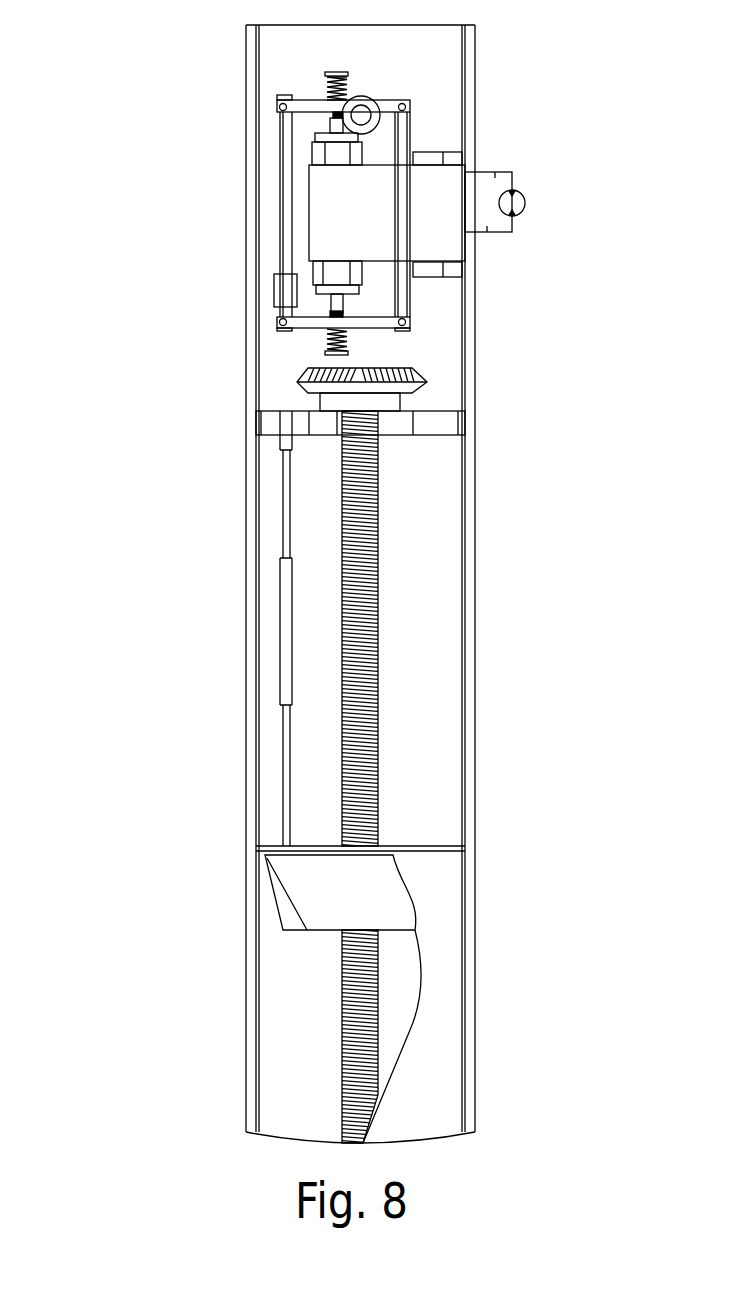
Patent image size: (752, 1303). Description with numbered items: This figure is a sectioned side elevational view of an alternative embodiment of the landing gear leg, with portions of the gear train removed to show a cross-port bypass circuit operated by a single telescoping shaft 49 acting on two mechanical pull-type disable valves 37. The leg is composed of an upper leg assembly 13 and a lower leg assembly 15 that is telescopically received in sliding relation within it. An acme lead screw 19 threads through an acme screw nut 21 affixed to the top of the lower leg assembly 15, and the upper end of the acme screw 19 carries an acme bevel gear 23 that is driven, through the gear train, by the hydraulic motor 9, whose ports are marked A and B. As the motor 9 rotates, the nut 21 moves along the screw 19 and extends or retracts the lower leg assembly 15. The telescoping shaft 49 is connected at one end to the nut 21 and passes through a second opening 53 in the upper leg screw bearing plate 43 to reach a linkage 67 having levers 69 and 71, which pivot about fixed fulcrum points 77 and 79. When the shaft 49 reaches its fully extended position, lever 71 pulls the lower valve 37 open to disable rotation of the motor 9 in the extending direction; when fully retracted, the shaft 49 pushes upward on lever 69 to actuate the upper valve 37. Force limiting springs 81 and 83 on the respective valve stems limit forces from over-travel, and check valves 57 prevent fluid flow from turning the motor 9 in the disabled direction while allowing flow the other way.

The hydraulic motor 9 is at (527, 210).
The upper leg assembly 13 is at (472, 598).
The lower leg assembly 15 is at (430, 925).
The acme lead screw 19 is at (350, 640).
The acme screw nut 21 is at (310, 890).
The acme bevel gear 23 is at (428, 378).
The pull-type cartridge disable valve 37 is at (325, 155).
The upper leg screw bearing plate 43 is at (398, 452).
The telescoping shaft 49 is at (283, 570).
The second opening 53 is at (262, 423).
The check valves 57 is at (434, 152).
The linkage 67 is at (228, 193).
The upper lever 69 is at (312, 102).
The lower lever 71 is at (310, 322).
The fixed fulcrum point 77 is at (402, 100).
The fixed fulcrum point 79 is at (410, 323).
The force limiting spring 81 is at (350, 82).
The force limiting spring 83 is at (350, 338).
The port A is at (495, 172).
The port B is at (487, 233).